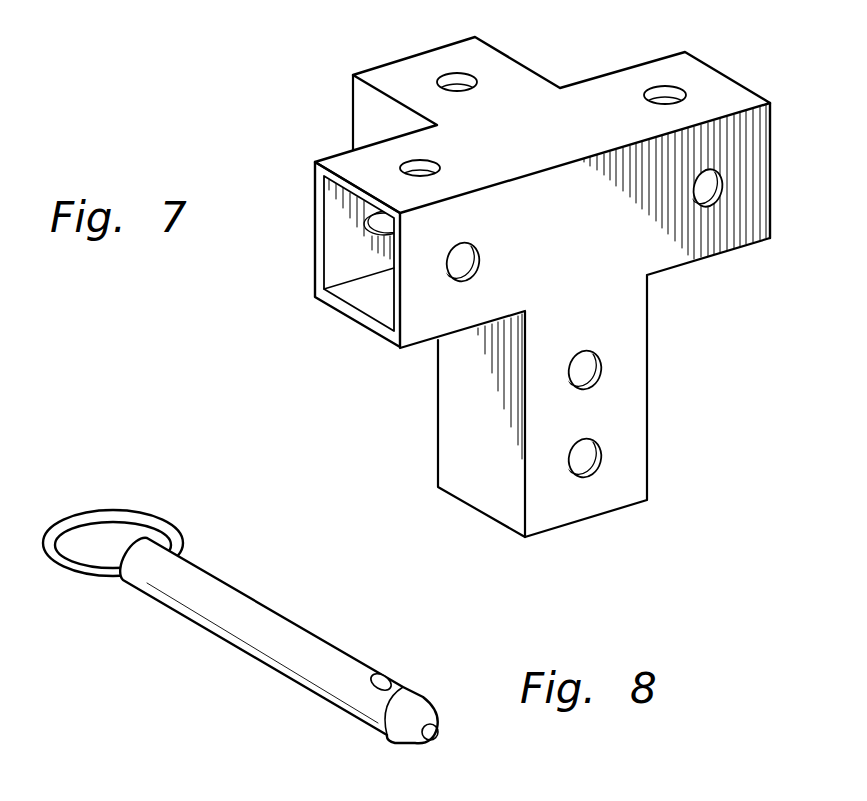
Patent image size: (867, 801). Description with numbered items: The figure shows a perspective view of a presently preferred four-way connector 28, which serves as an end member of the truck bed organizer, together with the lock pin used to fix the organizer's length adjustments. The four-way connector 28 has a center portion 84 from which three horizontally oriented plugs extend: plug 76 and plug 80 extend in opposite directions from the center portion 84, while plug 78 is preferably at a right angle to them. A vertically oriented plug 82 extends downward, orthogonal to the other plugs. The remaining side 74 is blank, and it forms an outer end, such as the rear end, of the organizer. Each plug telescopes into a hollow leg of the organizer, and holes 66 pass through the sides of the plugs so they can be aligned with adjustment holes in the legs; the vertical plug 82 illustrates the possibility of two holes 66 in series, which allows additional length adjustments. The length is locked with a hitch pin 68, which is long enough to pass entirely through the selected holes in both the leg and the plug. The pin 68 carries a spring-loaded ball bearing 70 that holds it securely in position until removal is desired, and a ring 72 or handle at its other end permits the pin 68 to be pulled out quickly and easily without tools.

In FIG. 7, the four-way connector 28 is at (498, 283).
In FIG. 7, the holes 66 is at (660, 95).
In FIG. 8, the hitch pin 68 is at (282, 615).
In FIG. 8, the spring-loaded ball bearing 70 is at (385, 674).
In FIG. 8, the ring 72 is at (118, 510).
In FIG. 7, the side 74 is at (571, 242).
In FIG. 7, the plug 76 is at (737, 82).
In FIG. 7, the plug 78 is at (400, 58).
In FIG. 7, the plug 80 is at (315, 243).
In FIG. 7, the vertical plug 82 is at (438, 410).
In FIG. 7, the center portion 84 is at (528, 147).